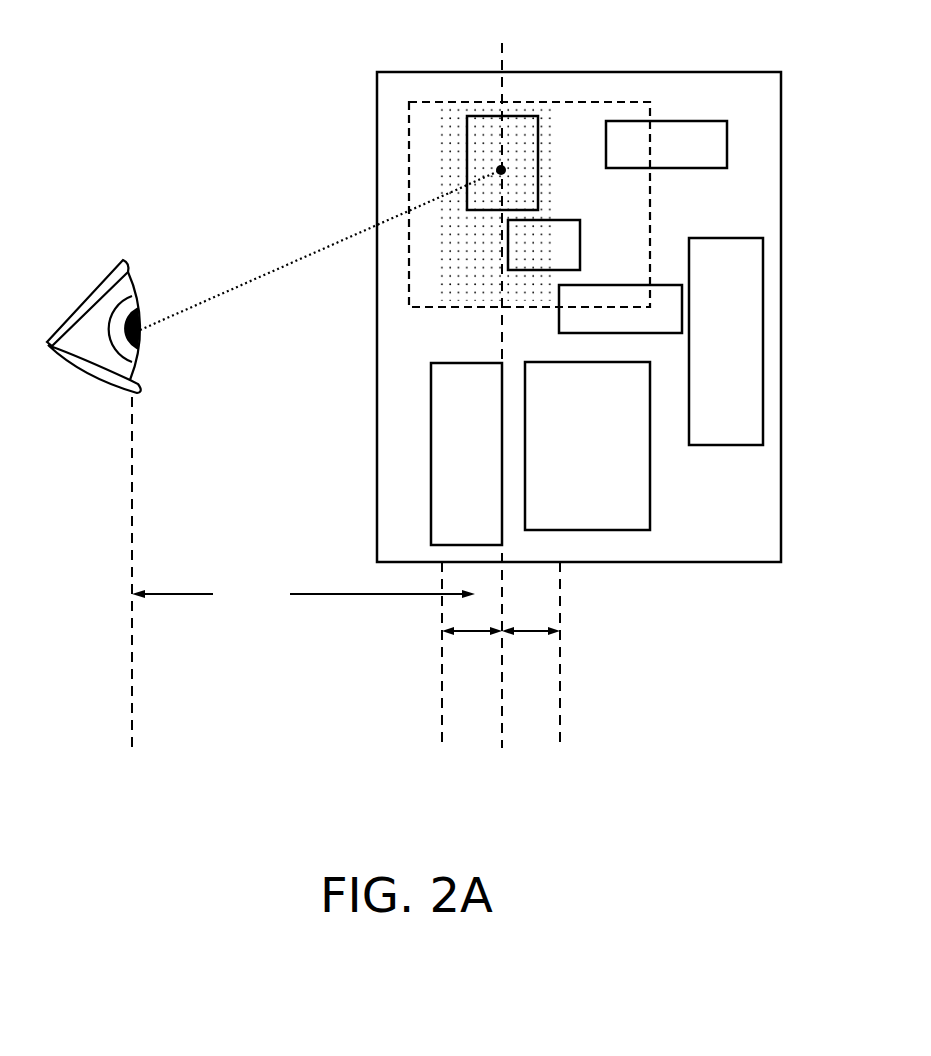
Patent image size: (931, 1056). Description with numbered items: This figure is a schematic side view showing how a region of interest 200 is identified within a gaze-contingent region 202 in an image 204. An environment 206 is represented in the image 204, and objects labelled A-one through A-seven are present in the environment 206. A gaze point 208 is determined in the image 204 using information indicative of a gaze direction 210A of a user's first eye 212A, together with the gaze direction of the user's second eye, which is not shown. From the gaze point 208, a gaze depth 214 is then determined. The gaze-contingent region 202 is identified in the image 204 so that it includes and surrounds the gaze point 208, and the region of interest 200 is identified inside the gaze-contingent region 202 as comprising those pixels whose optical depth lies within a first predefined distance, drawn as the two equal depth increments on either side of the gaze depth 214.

The region of interest 200 is at (545, 137).
The gaze-contingent region 202 is at (627, 97).
The image 204 is at (705, 95).
The environment 206 is at (400, 411).
The gaze point 208 is at (501, 170).
The gaze direction 210A is at (275, 272).
The user's first eye 212A is at (98, 288).
The gaze depth 214 is at (346, 395).